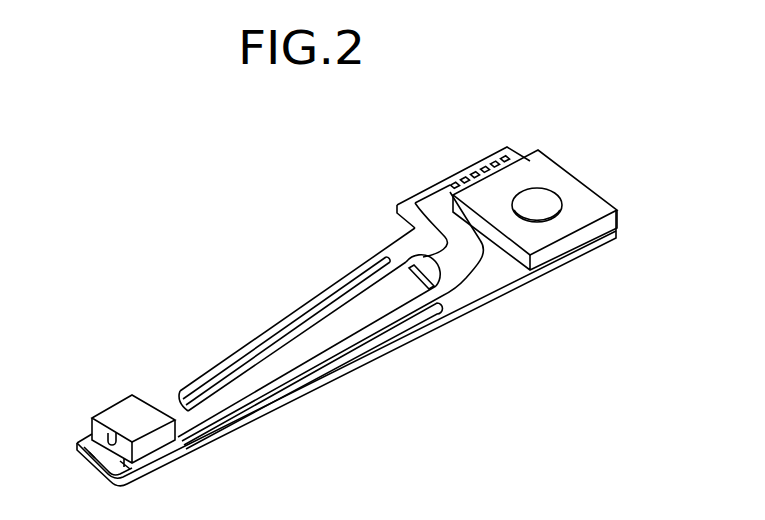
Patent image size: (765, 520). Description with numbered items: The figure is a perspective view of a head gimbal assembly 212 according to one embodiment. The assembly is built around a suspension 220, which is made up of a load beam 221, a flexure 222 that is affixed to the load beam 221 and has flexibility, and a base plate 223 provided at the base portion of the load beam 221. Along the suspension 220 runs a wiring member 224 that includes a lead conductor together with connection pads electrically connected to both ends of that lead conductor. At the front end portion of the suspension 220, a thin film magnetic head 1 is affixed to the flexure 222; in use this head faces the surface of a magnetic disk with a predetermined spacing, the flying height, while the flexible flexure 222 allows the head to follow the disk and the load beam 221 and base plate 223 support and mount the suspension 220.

The thin film magnetic head 1 is at (122, 413).
The head gimbal assembly 212 is at (352, 184).
The suspension 220 is at (339, 274).
The load beam 221 is at (458, 302).
The flexure 222 is at (383, 335).
The base plate 223 is at (562, 228).
The wiring member 224 is at (257, 392).